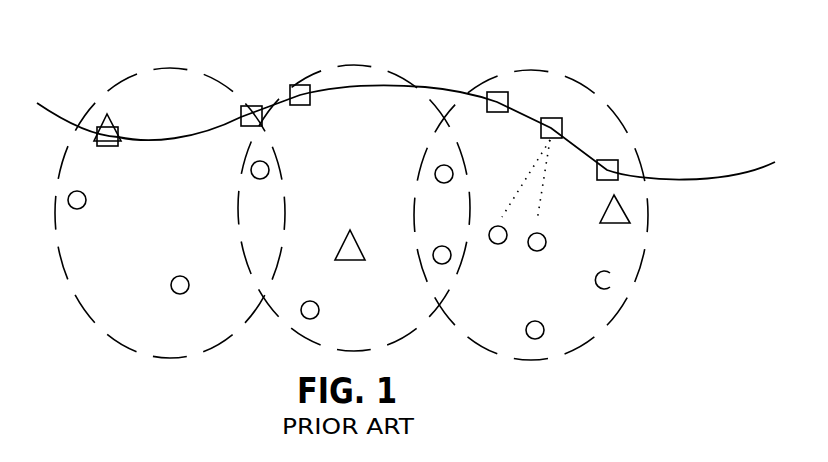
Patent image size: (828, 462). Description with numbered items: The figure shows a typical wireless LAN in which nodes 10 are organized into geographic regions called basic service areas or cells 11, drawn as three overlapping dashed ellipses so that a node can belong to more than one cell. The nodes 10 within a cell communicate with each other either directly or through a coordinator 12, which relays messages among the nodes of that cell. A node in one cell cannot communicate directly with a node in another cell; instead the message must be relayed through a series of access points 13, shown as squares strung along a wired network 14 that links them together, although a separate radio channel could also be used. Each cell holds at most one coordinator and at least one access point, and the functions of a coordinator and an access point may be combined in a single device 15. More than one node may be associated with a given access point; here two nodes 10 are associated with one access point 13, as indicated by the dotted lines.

The node 10 is at (499, 244).
The cell 11 is at (636, 276).
The coordinator 12 is at (630, 214).
The access point 13 is at (298, 85).
The wired network 14 is at (425, 88).
The single device 15 is at (109, 116).